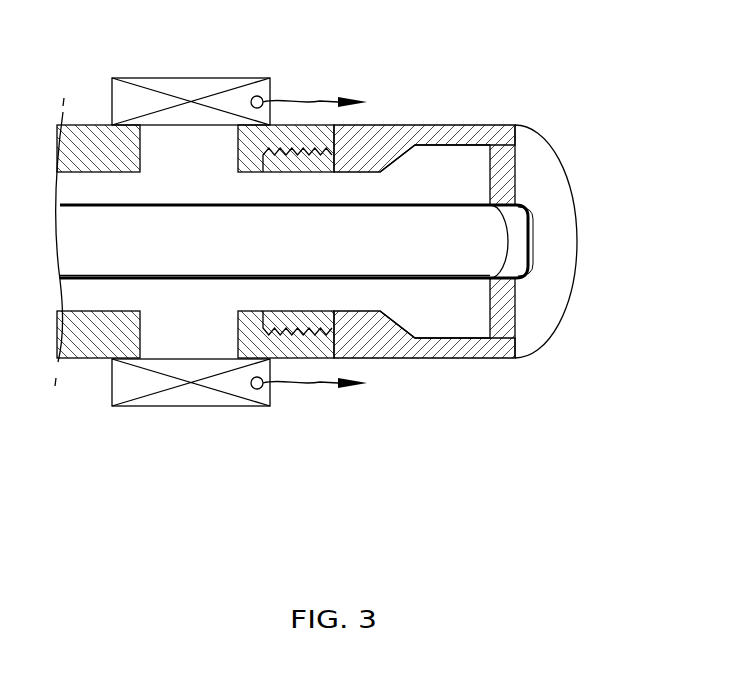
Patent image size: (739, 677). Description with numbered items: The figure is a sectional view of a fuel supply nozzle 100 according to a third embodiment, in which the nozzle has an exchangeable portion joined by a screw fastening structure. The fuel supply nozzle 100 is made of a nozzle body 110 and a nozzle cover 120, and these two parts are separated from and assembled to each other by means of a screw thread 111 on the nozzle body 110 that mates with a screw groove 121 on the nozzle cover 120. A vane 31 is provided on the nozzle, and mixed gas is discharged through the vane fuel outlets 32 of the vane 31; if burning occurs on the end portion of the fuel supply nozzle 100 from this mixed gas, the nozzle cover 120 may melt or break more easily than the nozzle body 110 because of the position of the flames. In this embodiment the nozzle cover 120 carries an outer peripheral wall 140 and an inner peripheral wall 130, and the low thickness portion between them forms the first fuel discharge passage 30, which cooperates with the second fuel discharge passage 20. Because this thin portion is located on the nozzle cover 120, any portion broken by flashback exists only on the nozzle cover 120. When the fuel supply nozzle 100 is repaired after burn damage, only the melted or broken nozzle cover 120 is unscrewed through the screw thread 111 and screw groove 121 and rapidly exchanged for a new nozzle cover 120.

The second fuel discharge passage 20 is at (493, 237).
The first fuel discharge passage 30 is at (459, 312).
The vane 31 is at (185, 92).
The vane fuel outlets 32 is at (257, 96).
The fuel supply nozzle 100 is at (317, 311).
The nozzle body 110 is at (195, 263).
The screw thread 111 is at (298, 146).
The nozzle cover 120 is at (456, 299).
The screw groove 121 is at (300, 322).
The inner peripheral wall 130 is at (455, 340).
The outer peripheral wall 140 is at (533, 274).